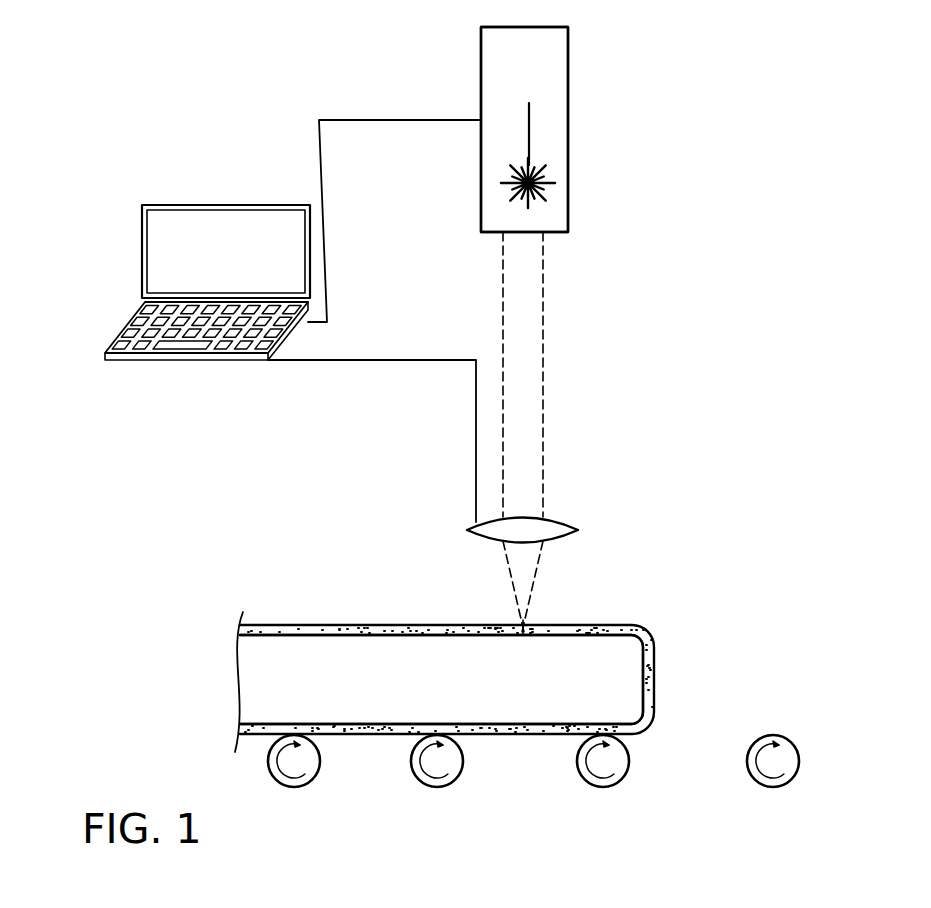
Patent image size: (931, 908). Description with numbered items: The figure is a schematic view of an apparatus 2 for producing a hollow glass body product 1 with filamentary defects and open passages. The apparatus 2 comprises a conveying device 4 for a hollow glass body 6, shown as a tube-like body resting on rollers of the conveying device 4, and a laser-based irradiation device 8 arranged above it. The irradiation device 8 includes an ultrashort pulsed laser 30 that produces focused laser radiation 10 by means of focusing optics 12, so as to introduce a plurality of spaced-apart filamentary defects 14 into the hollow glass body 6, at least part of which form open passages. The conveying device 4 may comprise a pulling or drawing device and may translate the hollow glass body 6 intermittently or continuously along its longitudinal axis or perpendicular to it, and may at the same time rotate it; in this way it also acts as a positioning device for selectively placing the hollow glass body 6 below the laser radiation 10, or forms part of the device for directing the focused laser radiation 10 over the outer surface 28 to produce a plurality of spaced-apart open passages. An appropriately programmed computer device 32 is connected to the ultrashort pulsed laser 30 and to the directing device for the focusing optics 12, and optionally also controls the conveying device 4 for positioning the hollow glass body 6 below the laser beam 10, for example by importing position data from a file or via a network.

The apparatus 2 is at (53, 89).
The computer device 32 is at (293, 209).
The ultrashort pulsed laser 30 is at (568, 107).
The laser-based irradiation device 8 is at (654, 157).
The focused laser radiation 10 is at (533, 585).
The focusing optics 12 is at (467, 530).
The filamentary defects 14 is at (521, 625).
The outer surface 28 is at (383, 625).
The hollow glass body product 1 is at (605, 625).
The hollow glass body 6 is at (473, 647).
The conveying device 4 is at (620, 778).